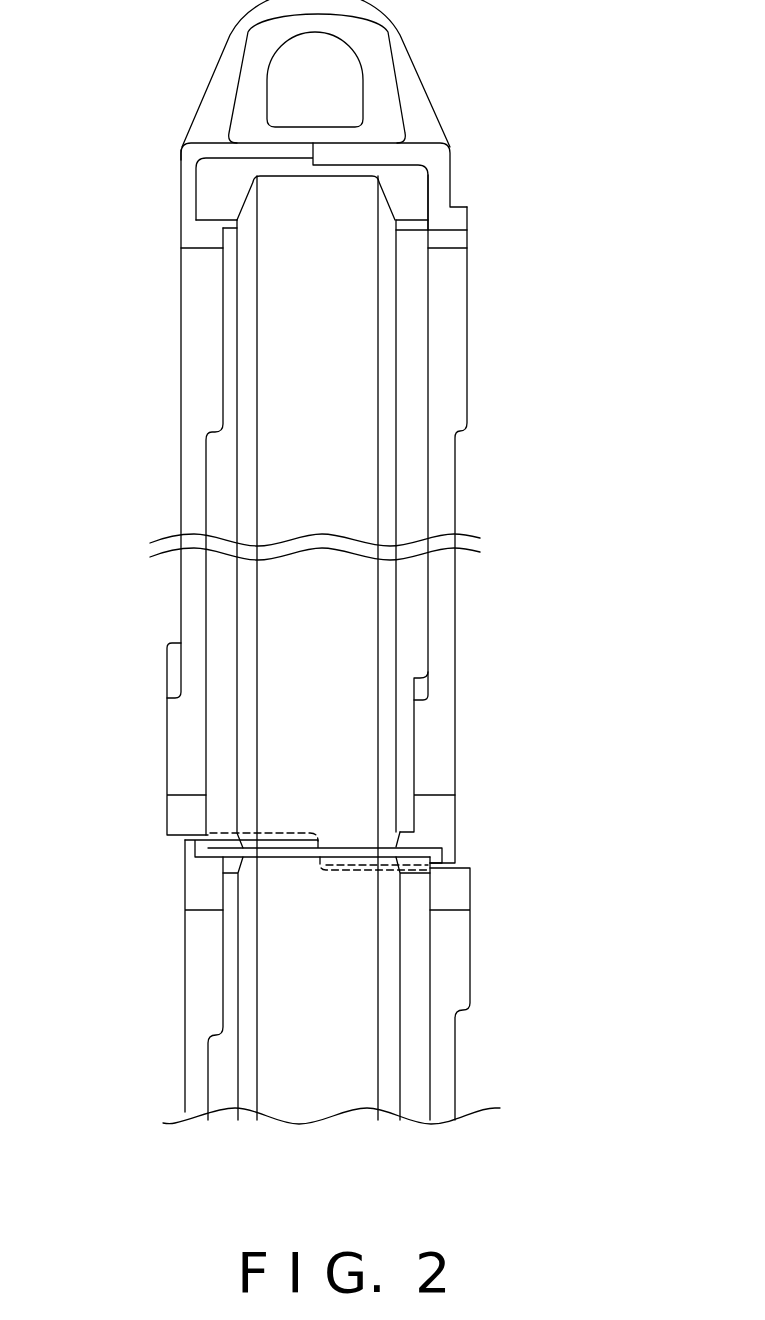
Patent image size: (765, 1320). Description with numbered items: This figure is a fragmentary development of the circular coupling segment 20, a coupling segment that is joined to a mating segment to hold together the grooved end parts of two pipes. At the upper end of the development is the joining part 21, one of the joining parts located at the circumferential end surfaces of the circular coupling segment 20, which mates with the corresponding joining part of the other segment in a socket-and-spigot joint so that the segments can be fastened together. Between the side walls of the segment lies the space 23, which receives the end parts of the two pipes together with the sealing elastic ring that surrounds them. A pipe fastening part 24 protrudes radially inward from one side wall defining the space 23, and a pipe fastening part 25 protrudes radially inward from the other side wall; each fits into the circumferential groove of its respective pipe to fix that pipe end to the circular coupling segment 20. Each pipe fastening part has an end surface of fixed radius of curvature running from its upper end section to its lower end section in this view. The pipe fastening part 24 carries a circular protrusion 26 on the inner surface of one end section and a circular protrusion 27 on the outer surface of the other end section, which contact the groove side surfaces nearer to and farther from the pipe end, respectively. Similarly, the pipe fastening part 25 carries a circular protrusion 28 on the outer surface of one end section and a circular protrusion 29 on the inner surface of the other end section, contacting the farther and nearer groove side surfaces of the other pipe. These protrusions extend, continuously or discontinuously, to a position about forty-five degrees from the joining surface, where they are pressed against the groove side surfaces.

The circular coupling segment 20 is at (207, 83).
The joining part 21 is at (408, 153).
The space 23 is at (338, 232).
The pipe fastening part 24 is at (190, 478).
The pipe fastening part 25 is at (445, 487).
The circular protrusion 26 is at (224, 320).
The circular protrusion 27 is at (181, 748).
The circular protrusion 28 is at (452, 322).
The circular protrusion 29 is at (417, 743).